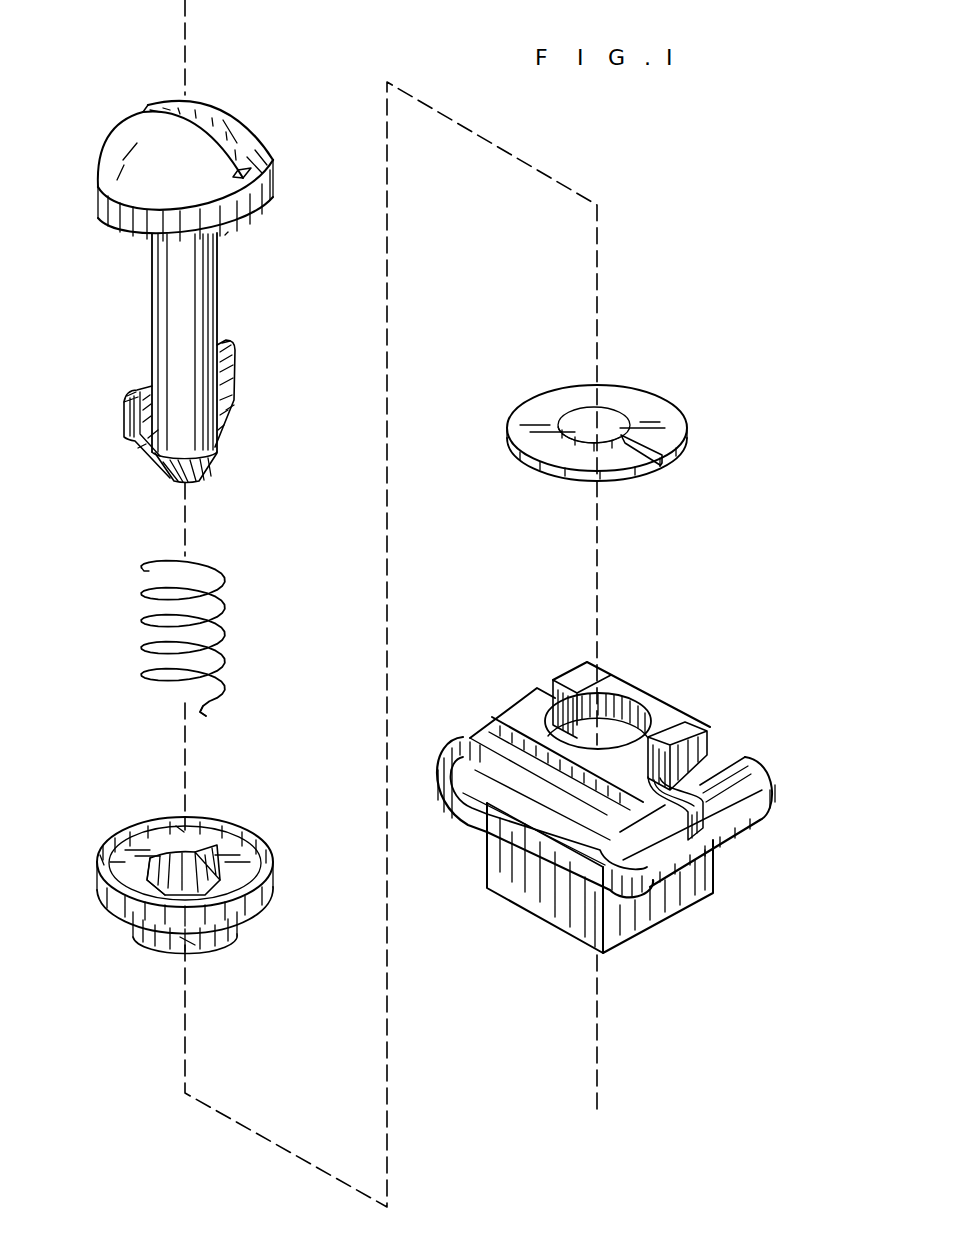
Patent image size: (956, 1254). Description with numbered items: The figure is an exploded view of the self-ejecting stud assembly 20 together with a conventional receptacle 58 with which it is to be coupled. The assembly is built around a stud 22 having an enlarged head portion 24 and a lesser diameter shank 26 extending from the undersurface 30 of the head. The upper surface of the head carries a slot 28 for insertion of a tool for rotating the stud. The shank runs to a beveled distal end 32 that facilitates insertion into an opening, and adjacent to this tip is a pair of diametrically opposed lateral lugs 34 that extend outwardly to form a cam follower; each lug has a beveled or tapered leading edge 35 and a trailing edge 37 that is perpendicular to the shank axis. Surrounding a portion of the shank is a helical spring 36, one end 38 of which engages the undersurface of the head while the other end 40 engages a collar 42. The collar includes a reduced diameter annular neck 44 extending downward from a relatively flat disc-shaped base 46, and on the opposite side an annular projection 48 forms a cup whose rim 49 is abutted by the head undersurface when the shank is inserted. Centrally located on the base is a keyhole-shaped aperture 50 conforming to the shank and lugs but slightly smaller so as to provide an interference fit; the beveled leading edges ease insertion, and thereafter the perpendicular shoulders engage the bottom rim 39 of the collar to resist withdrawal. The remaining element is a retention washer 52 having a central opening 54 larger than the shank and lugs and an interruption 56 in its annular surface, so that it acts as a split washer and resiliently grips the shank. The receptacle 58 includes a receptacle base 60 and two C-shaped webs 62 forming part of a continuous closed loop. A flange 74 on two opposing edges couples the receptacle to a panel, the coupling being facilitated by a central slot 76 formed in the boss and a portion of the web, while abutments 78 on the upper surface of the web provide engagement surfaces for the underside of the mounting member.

The self-ejecting stud assembly 20 is at (322, 130).
The stud 22 is at (135, 308).
The head portion 24 is at (250, 125).
The shank 26 is at (222, 288).
The slot 28 is at (143, 112).
The undersurface 30 is at (225, 235).
The distal end 32 is at (200, 482).
The lugs 34 is at (225, 378).
The leading edge 35 is at (232, 412).
The helical spring 36 is at (225, 617).
The trailing edge 37 is at (223, 345).
The spring end 38 is at (170, 530).
The bottom rim 39 is at (190, 943).
The spring end 40 is at (212, 722).
The collar 42 is at (265, 830).
The annular neck 44 is at (212, 938).
The base 46 is at (233, 883).
The annular projection 48 is at (180, 832).
The rim 49 is at (102, 860).
The aperture 50 is at (180, 870).
The retention washer 52 is at (682, 405).
The central opening 54 is at (608, 423).
The interruption 56 is at (653, 468).
The receptacle 58 is at (678, 700).
The receptacle base 60 is at (600, 879).
The C-shaped webs 62 is at (435, 763).
The flange 74 is at (713, 730).
The central slot 76 is at (700, 807).
The abutments 78 is at (742, 757).